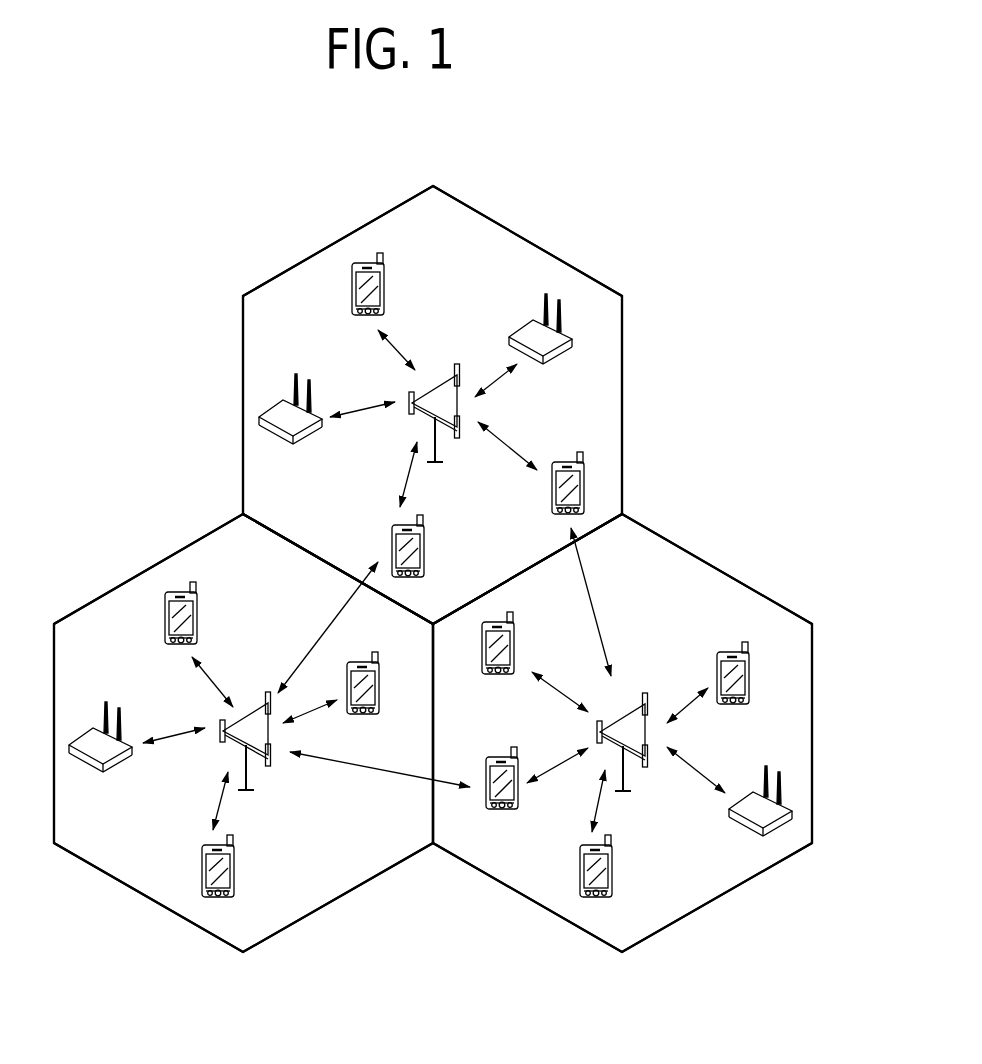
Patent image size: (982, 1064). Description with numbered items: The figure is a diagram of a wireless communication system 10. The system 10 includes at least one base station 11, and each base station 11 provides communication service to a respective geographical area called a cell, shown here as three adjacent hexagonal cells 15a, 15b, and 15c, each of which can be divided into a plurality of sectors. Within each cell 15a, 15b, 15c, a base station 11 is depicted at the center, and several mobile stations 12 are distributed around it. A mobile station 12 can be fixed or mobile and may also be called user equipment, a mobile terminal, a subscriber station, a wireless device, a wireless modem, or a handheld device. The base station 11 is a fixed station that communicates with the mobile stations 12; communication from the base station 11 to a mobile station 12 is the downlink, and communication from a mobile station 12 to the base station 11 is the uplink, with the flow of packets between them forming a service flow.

The wireless communication system 10 is at (705, 300).
The base station 11 is at (445, 382).
The mobile station 12 is at (385, 287).
The cell 15a is at (623, 390).
The cell 15b is at (738, 578).
The cell 15c is at (122, 580).